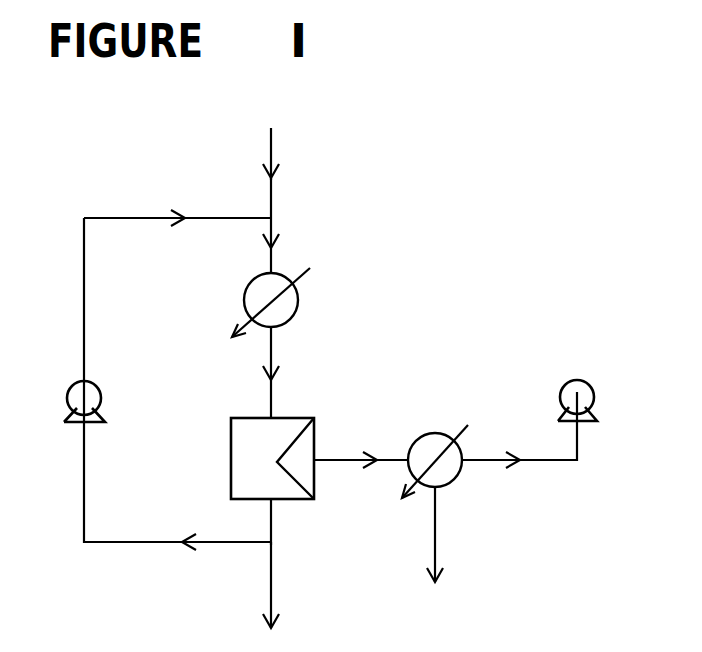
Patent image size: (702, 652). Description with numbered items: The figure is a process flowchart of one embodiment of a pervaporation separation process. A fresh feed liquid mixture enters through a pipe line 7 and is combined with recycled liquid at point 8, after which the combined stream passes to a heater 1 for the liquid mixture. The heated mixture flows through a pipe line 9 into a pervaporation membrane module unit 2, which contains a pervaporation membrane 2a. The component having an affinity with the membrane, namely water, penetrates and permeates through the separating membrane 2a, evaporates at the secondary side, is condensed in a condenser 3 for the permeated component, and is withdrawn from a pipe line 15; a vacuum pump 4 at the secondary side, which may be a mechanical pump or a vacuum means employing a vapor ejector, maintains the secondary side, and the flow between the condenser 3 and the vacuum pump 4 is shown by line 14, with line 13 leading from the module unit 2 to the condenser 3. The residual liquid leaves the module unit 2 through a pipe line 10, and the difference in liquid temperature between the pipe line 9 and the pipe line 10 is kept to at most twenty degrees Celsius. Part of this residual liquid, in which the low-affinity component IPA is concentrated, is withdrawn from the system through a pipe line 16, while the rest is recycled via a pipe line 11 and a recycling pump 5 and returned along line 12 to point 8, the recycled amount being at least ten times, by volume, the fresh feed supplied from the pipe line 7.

The heater 1 is at (260, 297).
The module unit 2 is at (250, 456).
The pervaporation membrane 2a is at (274, 458).
The condenser 3 is at (430, 447).
The vacuum pump 4 is at (567, 383).
The recycling pump 5 is at (71, 390).
The pipe line 7 is at (283, 142).
The point 8 is at (284, 225).
The pipe line 9 is at (285, 372).
The pipe line 10 is at (299, 523).
The pipe line 11 is at (177, 405).
The recycle return stream 12 is at (177, 199).
The vessel outlet stream 13 is at (361, 481).
The product stream 14 is at (519, 451).
The pipe line 15 is at (454, 534).
The pipe line 16 is at (294, 585).